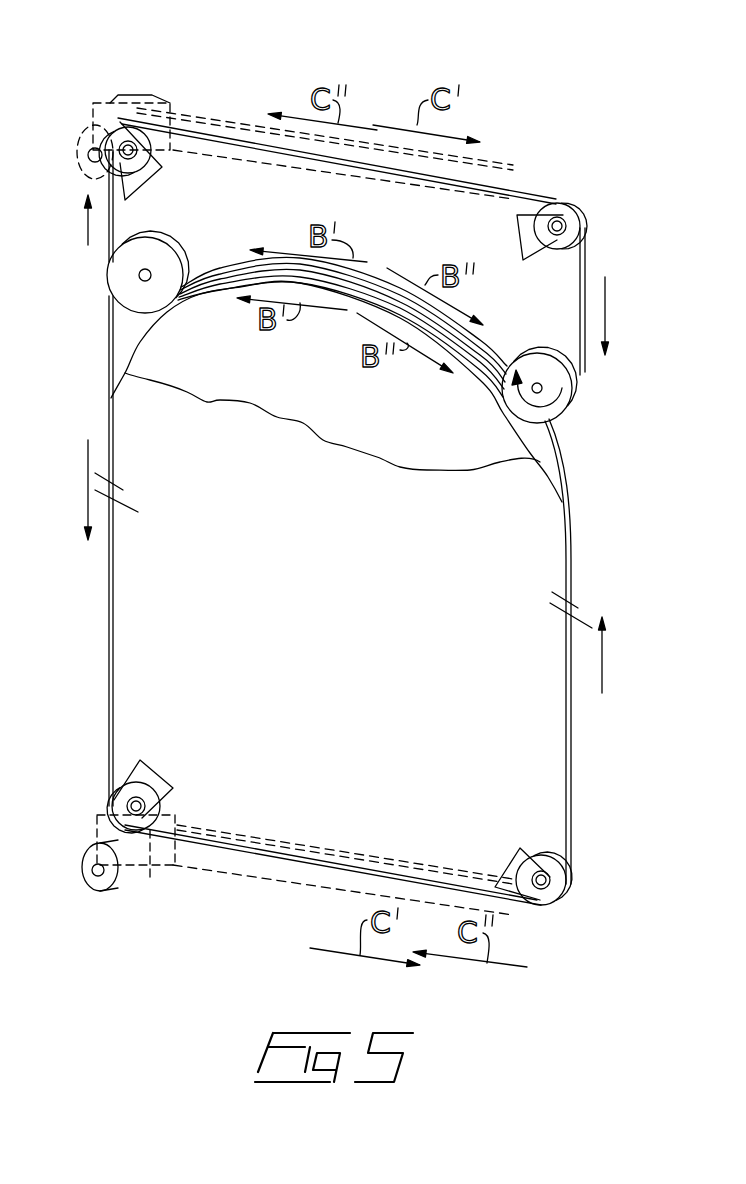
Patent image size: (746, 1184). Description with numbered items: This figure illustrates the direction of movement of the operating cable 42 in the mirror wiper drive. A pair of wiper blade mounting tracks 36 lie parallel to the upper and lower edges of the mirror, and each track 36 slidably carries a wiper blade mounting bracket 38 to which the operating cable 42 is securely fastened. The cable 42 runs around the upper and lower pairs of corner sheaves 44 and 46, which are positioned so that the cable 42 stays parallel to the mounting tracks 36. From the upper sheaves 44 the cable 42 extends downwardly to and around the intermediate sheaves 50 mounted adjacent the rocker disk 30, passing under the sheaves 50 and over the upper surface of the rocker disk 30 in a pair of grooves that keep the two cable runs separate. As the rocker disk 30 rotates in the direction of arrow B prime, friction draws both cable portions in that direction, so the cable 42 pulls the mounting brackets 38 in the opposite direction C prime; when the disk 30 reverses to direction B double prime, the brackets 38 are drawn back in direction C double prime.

The rocker disk 30 is at (327, 407).
The wiper blade mounting track 36 is at (217, 136).
The wiper blade mounting bracket 38 is at (147, 108).
The operating cable 42 is at (520, 190).
The upper corner sheave 44 is at (125, 120).
The lower corner sheave 46 is at (122, 800).
The intermediate sheave 50 is at (127, 282).